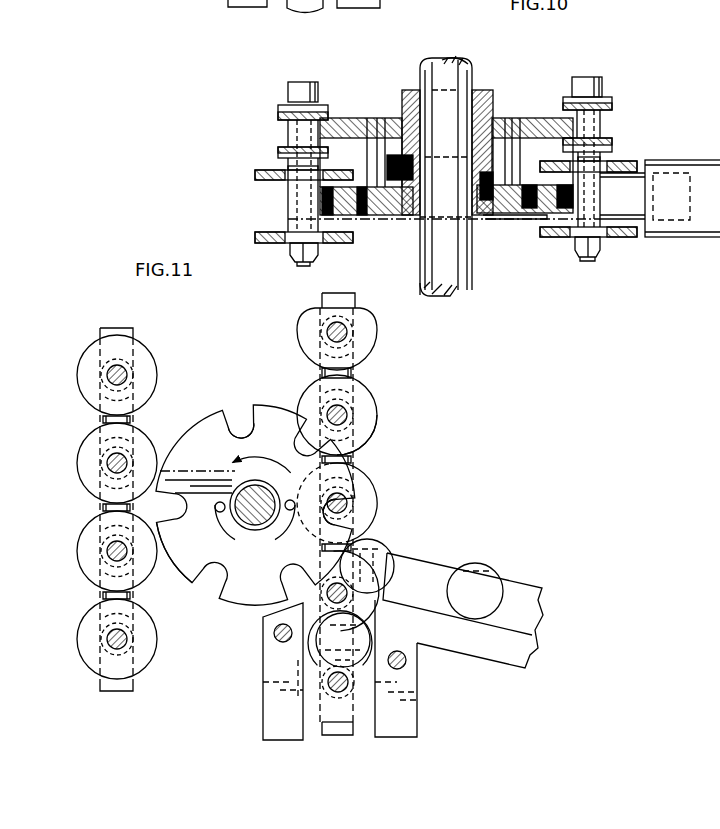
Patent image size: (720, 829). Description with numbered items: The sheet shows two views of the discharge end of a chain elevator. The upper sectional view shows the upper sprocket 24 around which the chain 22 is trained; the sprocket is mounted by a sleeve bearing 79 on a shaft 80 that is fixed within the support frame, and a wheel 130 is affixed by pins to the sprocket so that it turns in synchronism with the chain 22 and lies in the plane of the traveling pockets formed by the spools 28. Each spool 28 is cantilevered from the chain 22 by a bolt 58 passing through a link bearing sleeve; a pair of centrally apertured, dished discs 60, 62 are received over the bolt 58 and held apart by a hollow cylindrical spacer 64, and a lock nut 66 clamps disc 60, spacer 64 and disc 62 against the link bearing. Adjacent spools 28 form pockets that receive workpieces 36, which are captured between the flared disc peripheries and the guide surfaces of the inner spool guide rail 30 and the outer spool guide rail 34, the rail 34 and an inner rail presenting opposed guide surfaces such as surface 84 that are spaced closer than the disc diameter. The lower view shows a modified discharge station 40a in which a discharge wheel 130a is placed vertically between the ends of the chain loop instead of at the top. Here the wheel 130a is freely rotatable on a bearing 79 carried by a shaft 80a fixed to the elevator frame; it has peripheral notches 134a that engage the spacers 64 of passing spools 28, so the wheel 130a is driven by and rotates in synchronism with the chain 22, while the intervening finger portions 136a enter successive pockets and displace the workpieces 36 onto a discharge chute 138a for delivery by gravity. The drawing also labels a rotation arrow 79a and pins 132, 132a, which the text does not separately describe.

In FIG. 10, the chain 22 is at (276, 113).
In FIG. 11, the chain 22 is at (100, 598).
In FIG. 10, the upper sprocket 24 is at (545, 116).
In FIG. 10, the spool 28 is at (249, 169).
In FIG. 11, the spool 28 is at (86, 406).
In FIG. 10, the inner spool guide rail 30 is at (678, 236).
In FIG. 11, the inner spool guide rail 30 is at (400, 728).
In FIG. 10, the outer spool guide rail 34 is at (512, 222).
In FIG. 11, the outer spool guide rail 34 is at (262, 701).
In FIG. 11, the workpiece 36 is at (392, 578).
In FIG. 11, the modified discharge station 40a is at (393, 478).
In FIG. 10, the bolt 58 is at (313, 82).
In FIG. 11, the bolt 58 is at (128, 375).
In FIG. 10, the disc 60 is at (257, 237).
In FIG. 10, the disc 62 is at (272, 178).
In FIG. 11, the disc 62 is at (88, 482).
In FIG. 10, the hollow cylindrical spacer 64 is at (288, 220).
In FIG. 11, the hollow cylindrical spacer 64 is at (110, 375).
In FIG. 10, the lock nut 66 is at (313, 255).
In FIG. 10, the sleeve bearing 79 is at (477, 90).
In FIG. 11, the rotation direction arrow 79a is at (236, 461).
In FIG. 10, the shaft 80 is at (447, 80).
In FIG. 11, the shaft 80 is at (383, 728).
In FIG. 11, the shaft 80a is at (220, 482).
In FIG. 11, the guide surface 84 is at (313, 737).
In FIG. 10, the wheel 130 is at (402, 208).
In FIG. 11, the discharge wheel 130a is at (232, 608).
In FIG. 10, the pin 132 is at (377, 118).
In FIG. 11, the pin 132a is at (255, 534).
In FIG. 11, the peripheral notches 134a is at (222, 586).
In FIG. 11, the finger portions 136a is at (254, 410).
In FIG. 11, the discharge chute 138a is at (507, 657).